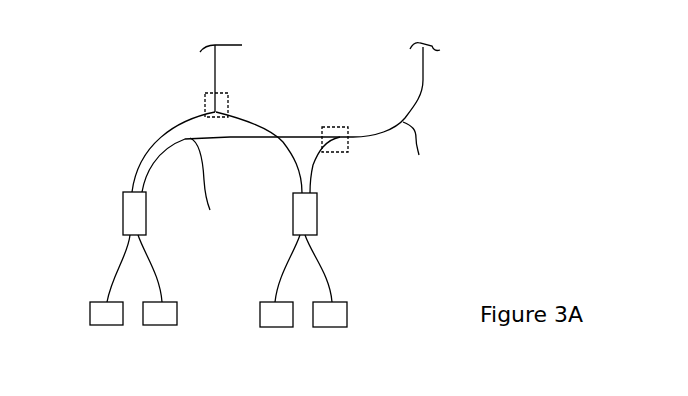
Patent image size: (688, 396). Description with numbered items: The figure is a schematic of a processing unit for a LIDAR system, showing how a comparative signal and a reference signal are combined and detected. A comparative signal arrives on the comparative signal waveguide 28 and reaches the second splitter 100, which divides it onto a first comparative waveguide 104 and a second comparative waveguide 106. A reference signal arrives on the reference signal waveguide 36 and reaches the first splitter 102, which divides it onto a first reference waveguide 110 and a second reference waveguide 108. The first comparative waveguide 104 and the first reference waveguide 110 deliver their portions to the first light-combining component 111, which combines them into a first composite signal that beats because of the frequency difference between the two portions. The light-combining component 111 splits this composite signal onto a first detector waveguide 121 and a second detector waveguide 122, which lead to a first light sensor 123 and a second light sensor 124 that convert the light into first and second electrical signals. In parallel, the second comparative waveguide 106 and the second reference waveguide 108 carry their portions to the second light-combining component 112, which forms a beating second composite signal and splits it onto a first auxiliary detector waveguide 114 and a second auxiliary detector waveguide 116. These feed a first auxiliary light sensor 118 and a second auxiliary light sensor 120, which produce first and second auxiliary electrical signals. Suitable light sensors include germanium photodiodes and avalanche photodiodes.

The comparative signal waveguide 28 is at (215, 68).
The reference signal waveguide 36 is at (295, 117).
The second splitter 100 is at (203, 99).
The first splitter 102 is at (335, 127).
The first comparative waveguide 104 is at (138, 153).
The second comparative waveguide 106 is at (297, 150).
The second reference waveguide 108 is at (313, 167).
The first reference waveguide 110 is at (215, 187).
The first light-combining component 111 is at (180, 188).
The second light-combining component 112 is at (318, 225).
The first auxiliary detector waveguide 114 is at (283, 272).
The second auxiliary detector waveguide 116 is at (325, 270).
The first auxiliary light sensor 118 is at (258, 302).
The second auxiliary light sensor 120 is at (347, 302).
The first detector waveguide 121 is at (113, 272).
The second detector waveguide 122 is at (145, 258).
The first light sensor 123 is at (90, 302).
The second light sensor 124 is at (160, 328).